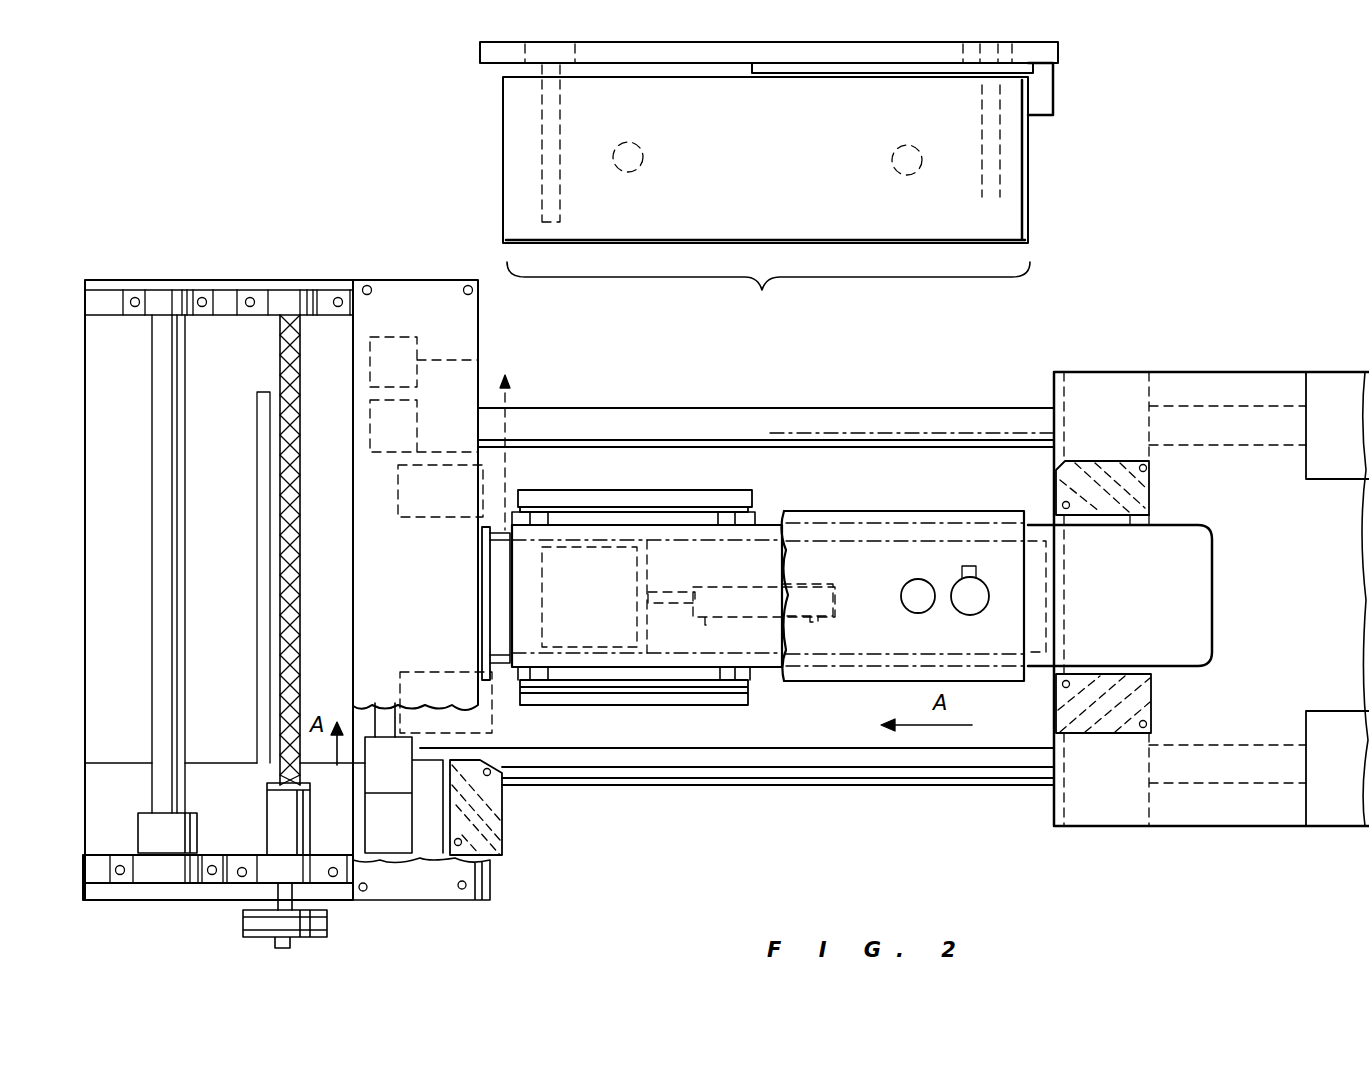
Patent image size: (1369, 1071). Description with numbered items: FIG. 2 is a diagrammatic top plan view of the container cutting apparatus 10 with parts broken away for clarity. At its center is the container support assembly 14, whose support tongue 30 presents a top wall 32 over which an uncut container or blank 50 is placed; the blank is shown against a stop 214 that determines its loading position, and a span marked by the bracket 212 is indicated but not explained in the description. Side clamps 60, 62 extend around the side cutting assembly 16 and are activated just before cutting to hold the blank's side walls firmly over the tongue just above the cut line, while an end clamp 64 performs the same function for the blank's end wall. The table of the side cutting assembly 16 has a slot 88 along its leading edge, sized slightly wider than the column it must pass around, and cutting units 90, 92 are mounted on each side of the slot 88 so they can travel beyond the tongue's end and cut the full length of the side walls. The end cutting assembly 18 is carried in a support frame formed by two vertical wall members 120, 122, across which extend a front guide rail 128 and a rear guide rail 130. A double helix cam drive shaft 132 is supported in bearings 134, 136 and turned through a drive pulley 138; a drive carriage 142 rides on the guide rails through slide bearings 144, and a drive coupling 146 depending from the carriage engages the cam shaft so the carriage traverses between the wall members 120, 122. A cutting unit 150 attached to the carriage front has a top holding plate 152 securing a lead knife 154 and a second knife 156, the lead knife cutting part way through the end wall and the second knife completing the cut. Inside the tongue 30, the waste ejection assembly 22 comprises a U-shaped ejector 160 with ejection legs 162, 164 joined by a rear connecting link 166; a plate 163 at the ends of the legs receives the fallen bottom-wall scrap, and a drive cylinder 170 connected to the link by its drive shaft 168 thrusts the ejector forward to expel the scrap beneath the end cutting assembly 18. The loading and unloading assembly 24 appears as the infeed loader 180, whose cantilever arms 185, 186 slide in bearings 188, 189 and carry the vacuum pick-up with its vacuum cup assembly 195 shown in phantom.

The apparatus 10 is at (1268, 228).
The container support assembly 14 is at (766, 505).
The side cutting assembly 16 is at (1042, 818).
The end cutting assembly 18 is at (218, 218).
The waste ejection assembly 22 is at (843, 594).
The loading and unloading assembly 24 is at (1178, 108).
The support tongue 30 is at (773, 700).
The top wall 32 is at (647, 596).
The uncut container or blank 50 is at (1030, 185).
The side clamp 60 is at (614, 697).
The side clamp 62 is at (648, 462).
The end clamp 64 is at (480, 596).
The slot 88 is at (1205, 590).
The cutting unit 90 is at (1156, 703).
The cutting unit 92 is at (1150, 485).
The vertical wall member 120 is at (125, 900).
The vertical wall member 122 is at (212, 280).
The front guide rail 128 is at (385, 700).
The rear guide rail 130 is at (158, 440).
The double helix cam drive shaft 132 is at (305, 332).
The bearing 134 is at (268, 893).
The bearing 136 is at (290, 290).
The drive pulley 138 is at (320, 938).
The drive carriage 142 is at (252, 799).
The slide bearings 144 is at (140, 813).
The drive coupling 146 is at (300, 813).
The cutting unit 150 is at (512, 372).
The top holding plate 152 is at (475, 853).
The lead knife 154 is at (500, 830).
The second knife 156 is at (470, 848).
The U-shaped ejector 160 is at (618, 630).
The ejection leg 162 is at (560, 647).
The plate 163 is at (508, 625).
The ejection leg 164 is at (578, 556).
The rear connecting link 166 is at (650, 555).
The drive shaft 168 is at (660, 618).
The drive cylinder 170 is at (812, 622).
The infeed loader 180 is at (494, 148).
The cantilever arm 185 is at (552, 210).
The cantilever arm 186 is at (980, 195).
The bearing 188 is at (478, 52).
The bearing 189 is at (940, 85).
The vacuum cup assembly 195 is at (893, 152).
The tray width 212 is at (768, 294).
The stop 214 is at (1055, 85).